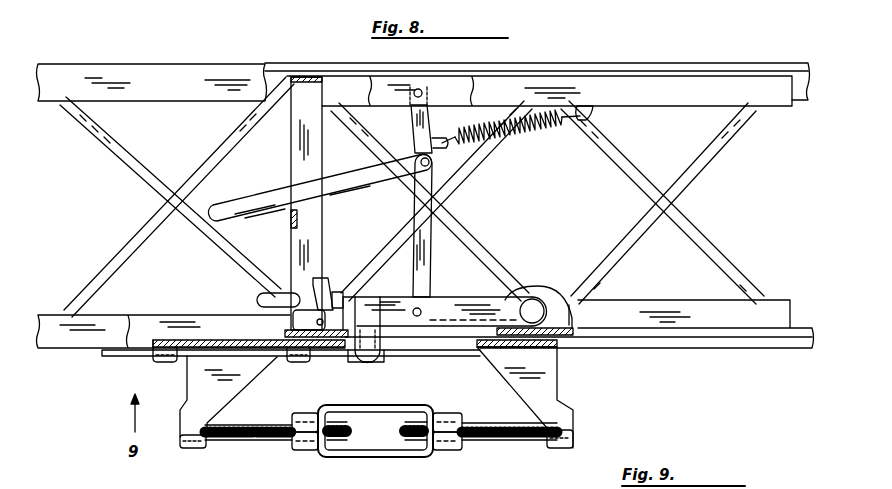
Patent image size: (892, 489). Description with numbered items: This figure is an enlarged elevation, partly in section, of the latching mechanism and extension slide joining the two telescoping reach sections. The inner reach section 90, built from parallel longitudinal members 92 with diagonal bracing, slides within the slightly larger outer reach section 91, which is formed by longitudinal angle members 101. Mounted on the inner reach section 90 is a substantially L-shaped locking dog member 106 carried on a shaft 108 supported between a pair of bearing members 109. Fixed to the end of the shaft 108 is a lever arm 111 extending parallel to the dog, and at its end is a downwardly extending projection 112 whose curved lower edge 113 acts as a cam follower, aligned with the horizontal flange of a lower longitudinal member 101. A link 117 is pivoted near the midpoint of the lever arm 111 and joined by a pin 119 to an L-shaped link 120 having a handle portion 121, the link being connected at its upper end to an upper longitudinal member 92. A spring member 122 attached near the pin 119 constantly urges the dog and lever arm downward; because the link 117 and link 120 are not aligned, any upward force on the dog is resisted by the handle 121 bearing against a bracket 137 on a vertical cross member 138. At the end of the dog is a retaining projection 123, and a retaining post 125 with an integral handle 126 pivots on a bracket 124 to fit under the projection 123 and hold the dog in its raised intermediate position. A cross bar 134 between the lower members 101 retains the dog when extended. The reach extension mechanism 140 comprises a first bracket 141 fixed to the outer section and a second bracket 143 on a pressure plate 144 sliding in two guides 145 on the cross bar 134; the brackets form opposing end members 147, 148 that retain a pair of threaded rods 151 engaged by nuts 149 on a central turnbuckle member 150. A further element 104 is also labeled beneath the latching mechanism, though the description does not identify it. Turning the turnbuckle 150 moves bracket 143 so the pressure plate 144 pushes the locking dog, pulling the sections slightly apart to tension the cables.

The inner reach section 90 is at (767, 97).
The outer reach section 91 is at (168, 87).
The longitudinal members 92 is at (703, 103).
The longitudinal angle members 101 is at (100, 90).
The bolt 104 is at (352, 367).
The locking dog member 106 is at (364, 298).
The shaft 108 is at (551, 292).
The bearing members 109 is at (572, 315).
The lever arm 111 is at (442, 302).
The downwardly extending projection 112 is at (380, 352).
The curved lower edge 113 is at (365, 364).
The link 117 is at (422, 254).
The pin 119 is at (429, 162).
The L-shaped link 120 is at (420, 120).
The handle portion 121 is at (265, 198).
The spring member 122 is at (512, 140).
The retaining projection 123 is at (333, 295).
The bracket 124 is at (296, 323).
The retaining post 125 is at (318, 280).
The integral handle 126 is at (257, 299).
The cross bar 134 is at (163, 316).
The bracket 137 is at (289, 220).
The vertical cross member 138 is at (323, 222).
The reach extension mechanism 140 is at (393, 458).
The first bracket 141 is at (550, 380).
The second bracket 143 is at (228, 384).
The pressure plate 144 is at (126, 353).
The guides 145 is at (170, 362).
The end member 147 is at (202, 450).
The end member 148 is at (557, 448).
The nuts 149 is at (303, 453).
The central turnbuckle member 150 is at (413, 453).
The threaded rods 151 is at (240, 438).